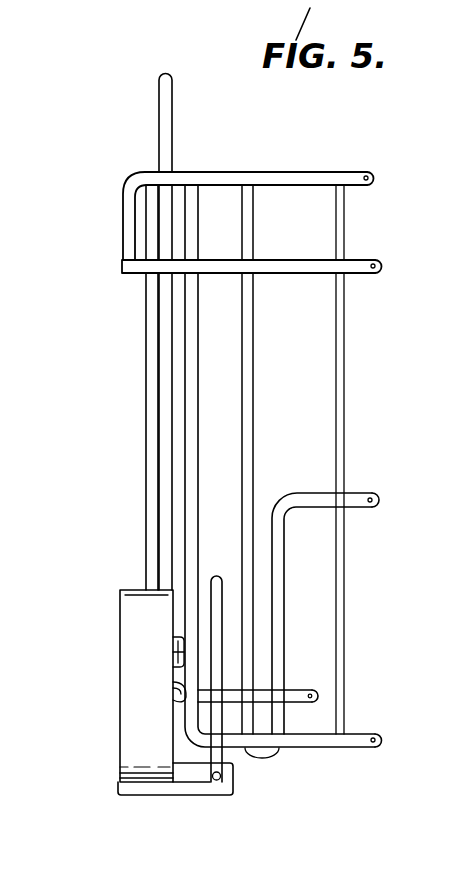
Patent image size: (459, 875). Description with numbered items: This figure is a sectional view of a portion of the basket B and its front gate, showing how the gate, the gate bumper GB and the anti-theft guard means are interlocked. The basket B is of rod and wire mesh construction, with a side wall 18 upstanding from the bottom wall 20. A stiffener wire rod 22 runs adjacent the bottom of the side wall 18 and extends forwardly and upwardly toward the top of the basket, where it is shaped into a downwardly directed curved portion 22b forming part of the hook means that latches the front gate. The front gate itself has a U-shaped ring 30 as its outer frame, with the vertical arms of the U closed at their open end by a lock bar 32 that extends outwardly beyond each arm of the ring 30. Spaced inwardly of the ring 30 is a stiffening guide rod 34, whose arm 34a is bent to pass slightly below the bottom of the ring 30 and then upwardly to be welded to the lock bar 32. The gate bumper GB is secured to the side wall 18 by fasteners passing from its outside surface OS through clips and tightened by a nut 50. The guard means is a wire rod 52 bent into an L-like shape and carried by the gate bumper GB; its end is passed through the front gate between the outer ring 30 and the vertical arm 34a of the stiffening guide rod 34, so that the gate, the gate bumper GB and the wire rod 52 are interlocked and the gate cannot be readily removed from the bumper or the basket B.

The side wall 18 is at (163, 116).
The bottom wall 20 is at (300, 688).
The stiffener wire rod 22 is at (147, 503).
The curved portion 22b is at (150, 218).
The U-shaped ring 30 is at (197, 405).
The lock bar 32 is at (304, 183).
The stiffening guide rod 34 is at (283, 575).
The arm of stiffening guide rod 34a is at (250, 363).
The nut 50 is at (172, 664).
The wire rod 52 is at (228, 755).
The basket B is at (135, 368).
The outside surface OS is at (120, 640).
The gate bumper GB is at (120, 763).